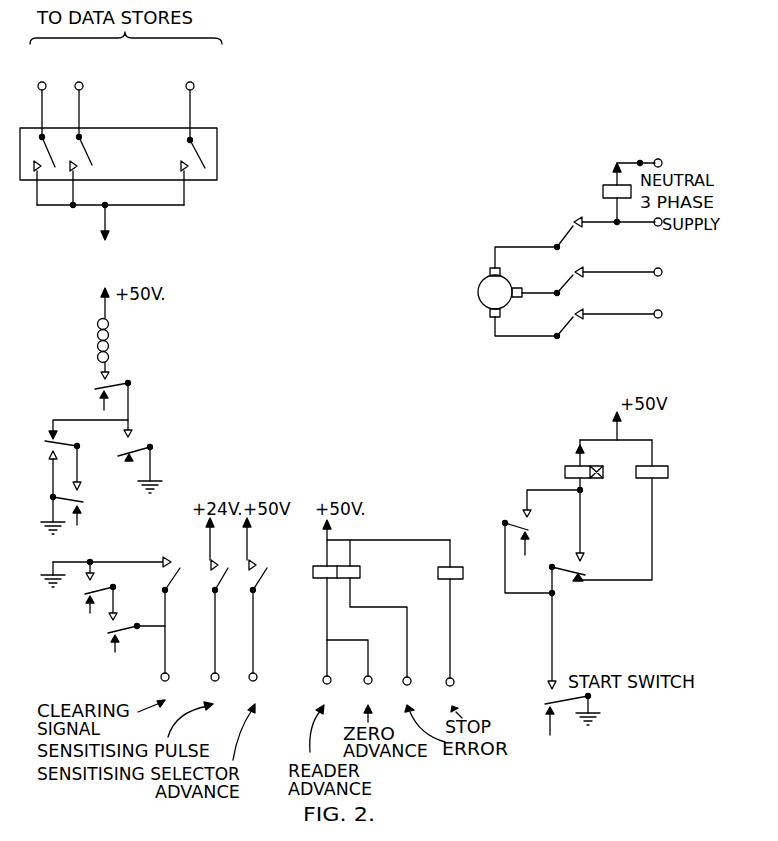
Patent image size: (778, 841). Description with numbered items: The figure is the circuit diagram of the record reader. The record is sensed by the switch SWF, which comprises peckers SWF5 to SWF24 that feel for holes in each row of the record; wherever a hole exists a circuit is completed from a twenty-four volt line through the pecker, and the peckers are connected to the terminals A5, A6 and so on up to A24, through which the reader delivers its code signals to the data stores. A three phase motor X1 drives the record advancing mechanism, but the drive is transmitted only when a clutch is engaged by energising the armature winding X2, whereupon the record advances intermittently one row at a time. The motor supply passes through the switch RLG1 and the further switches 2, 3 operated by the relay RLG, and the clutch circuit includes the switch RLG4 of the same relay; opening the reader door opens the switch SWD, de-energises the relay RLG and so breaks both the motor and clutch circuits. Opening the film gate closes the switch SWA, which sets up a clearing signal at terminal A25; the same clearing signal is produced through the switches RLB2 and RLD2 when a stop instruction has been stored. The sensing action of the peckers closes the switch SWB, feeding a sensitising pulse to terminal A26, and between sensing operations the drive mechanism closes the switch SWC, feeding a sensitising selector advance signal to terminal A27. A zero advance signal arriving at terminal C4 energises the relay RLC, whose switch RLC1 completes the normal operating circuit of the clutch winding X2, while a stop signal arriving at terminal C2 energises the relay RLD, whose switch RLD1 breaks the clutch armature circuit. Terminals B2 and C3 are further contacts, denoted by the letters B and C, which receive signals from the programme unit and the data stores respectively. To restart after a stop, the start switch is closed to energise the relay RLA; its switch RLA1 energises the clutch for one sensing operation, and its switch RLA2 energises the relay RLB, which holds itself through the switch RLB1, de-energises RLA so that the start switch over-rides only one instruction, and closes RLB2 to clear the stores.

The reader terminal A5 is at (47, 98).
The reader terminal A6 is at (84, 98).
The reader terminal A24 is at (202, 100).
The pecker switch SWF is at (118, 186).
The pecker SWF5 is at (38, 150).
The pecker SWF24 is at (205, 150).
The door switch SWD is at (637, 161).
The relay winding RLG is at (589, 191).
The relay switch RLG1 is at (552, 222).
The three phase motor X1 is at (492, 299).
The contact 2 of RLG 2 is at (550, 273).
The contact 3 of RLG 3 is at (550, 315).
The clutch armature winding X2 is at (123, 346).
The relay switch RLG4 is at (139, 391).
The relay switch RLD1 is at (43, 433).
The relay switch RLA1 is at (152, 456).
The relay switch RLC1 is at (93, 510).
The film gate switch SWA is at (116, 564).
The sensitising switch SWB is at (216, 580).
The selector advance switch SWC is at (263, 581).
The relay switch RLD2 is at (78, 603).
The relay switch RLB2 is at (116, 649).
The clearing signal terminal A25 is at (171, 648).
The sensitising pulse terminal A26 is at (221, 648).
The sensitising selector advance terminal A27 is at (261, 648).
The programme unit terminal B2 is at (326, 642).
The zero advance terminal C4 is at (351, 673).
The data store terminal C3 is at (384, 642).
The stop signal terminal C2 is at (449, 642).
The relay winding RLC is at (320, 562).
The relay winding RLD is at (446, 562).
The relay winding RLB is at (548, 472).
The relay winding RLA is at (690, 503).
The relay switch RLA2 is at (500, 527).
The relay switch RLB1 is at (580, 587).